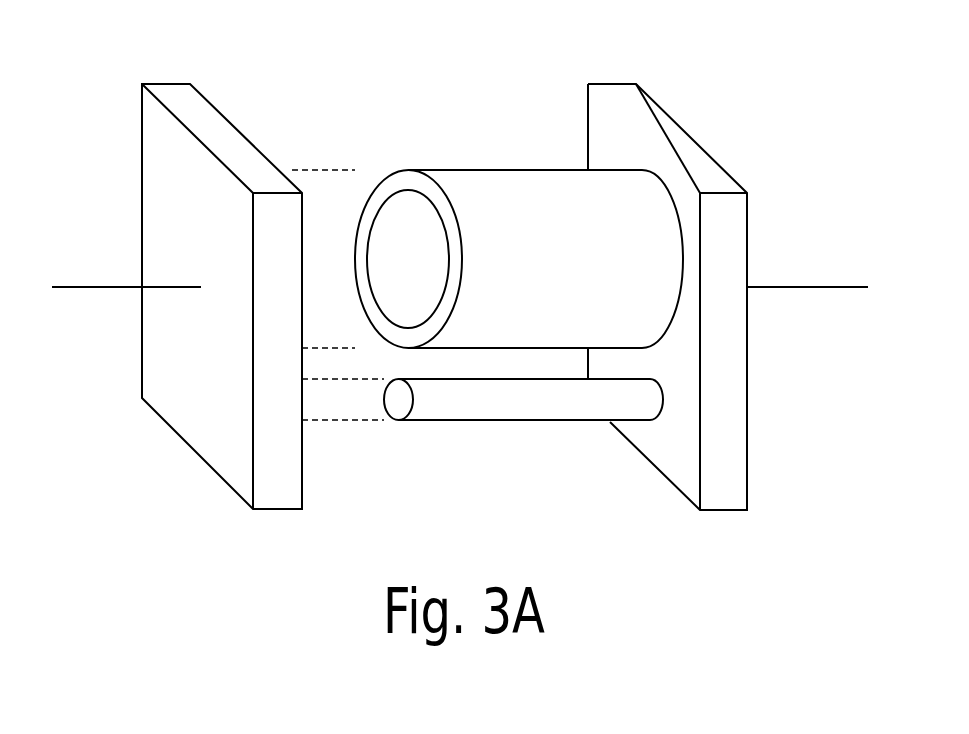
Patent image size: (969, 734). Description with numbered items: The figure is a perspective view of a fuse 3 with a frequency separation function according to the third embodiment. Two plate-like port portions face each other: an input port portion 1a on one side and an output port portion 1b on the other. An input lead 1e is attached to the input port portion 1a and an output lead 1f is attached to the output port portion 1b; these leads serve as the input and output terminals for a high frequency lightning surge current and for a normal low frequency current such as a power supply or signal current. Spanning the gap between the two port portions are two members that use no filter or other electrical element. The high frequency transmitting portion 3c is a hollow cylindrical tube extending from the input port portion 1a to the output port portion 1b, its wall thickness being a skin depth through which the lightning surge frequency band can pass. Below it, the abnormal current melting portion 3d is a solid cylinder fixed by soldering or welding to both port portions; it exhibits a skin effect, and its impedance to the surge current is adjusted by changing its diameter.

The input port portion 1a is at (163, 84).
The output port portion 1b is at (693, 138).
The input lead 1e is at (93, 287).
The output lead 1f is at (822, 287).
The fuse with a frequency separation function 3 is at (490, 80).
The high frequency transmitting portion 3c is at (498, 170).
The abnormal current melting portion 3d is at (540, 421).